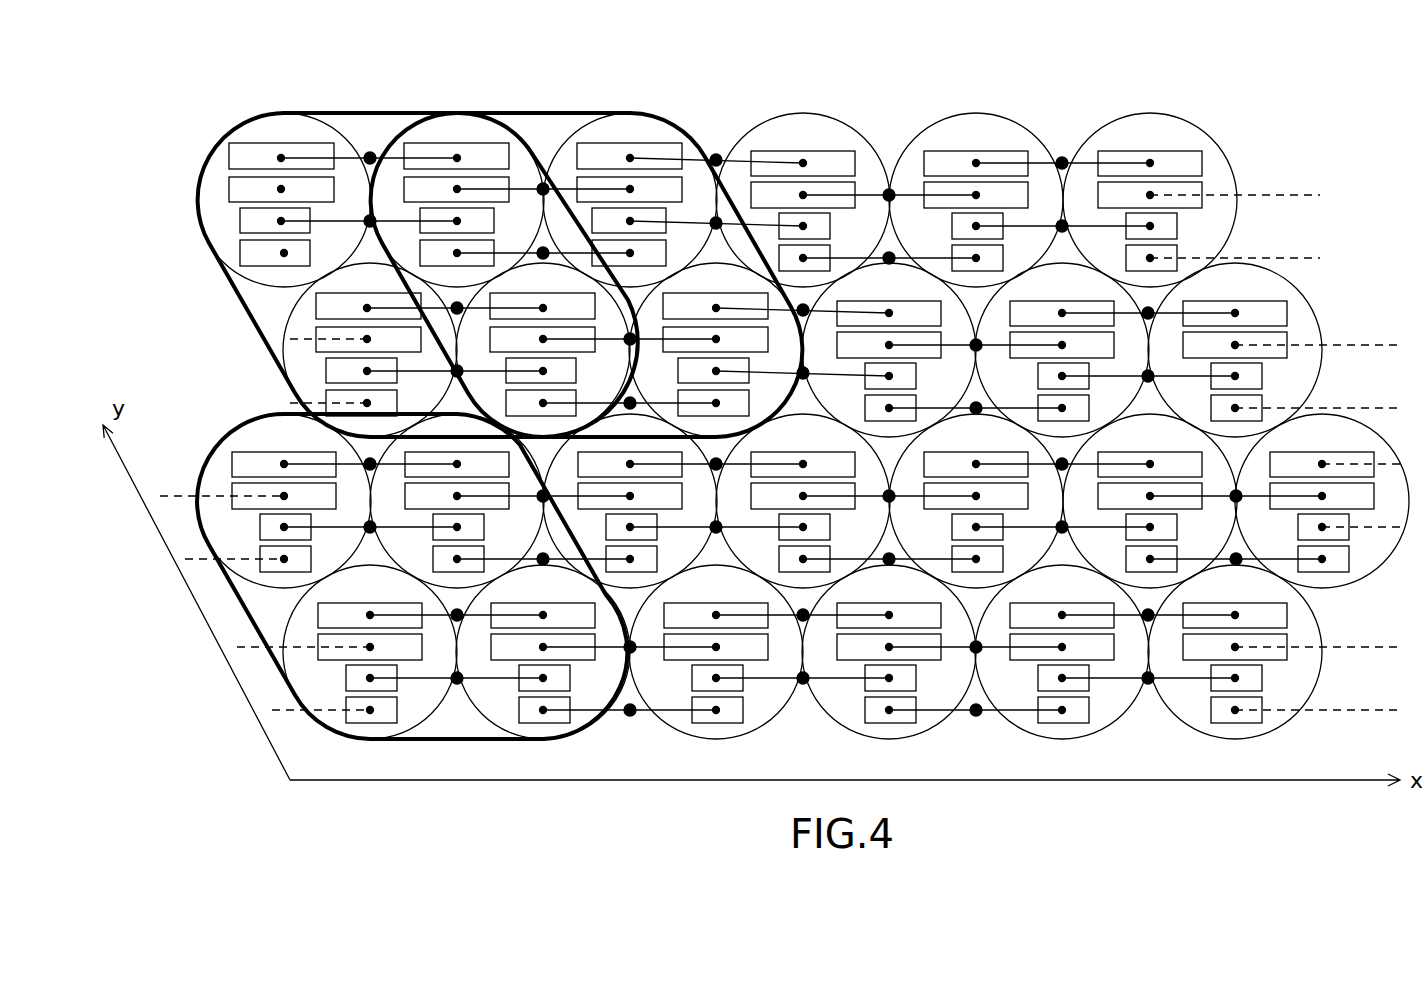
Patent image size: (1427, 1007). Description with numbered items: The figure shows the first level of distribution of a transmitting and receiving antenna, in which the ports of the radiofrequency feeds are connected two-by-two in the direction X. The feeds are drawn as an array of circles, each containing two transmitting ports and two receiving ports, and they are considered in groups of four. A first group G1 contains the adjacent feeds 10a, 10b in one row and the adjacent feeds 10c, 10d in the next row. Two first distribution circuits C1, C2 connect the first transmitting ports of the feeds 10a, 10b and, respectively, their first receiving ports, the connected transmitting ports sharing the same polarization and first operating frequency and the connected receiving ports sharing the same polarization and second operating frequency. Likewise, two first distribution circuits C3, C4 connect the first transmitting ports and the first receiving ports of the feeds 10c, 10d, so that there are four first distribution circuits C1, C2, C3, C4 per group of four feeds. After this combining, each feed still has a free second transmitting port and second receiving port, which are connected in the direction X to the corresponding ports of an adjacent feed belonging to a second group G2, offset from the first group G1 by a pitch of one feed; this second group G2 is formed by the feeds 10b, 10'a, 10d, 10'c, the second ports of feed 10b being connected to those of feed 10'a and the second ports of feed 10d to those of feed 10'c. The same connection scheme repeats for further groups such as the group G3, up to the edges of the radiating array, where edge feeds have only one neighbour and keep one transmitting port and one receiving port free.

The radiofrequency feed 10a is at (278, 133).
The radiofrequency feed 10b is at (460, 128).
The radiofrequency feed 10'a is at (630, 156).
The radiofrequency feed 10c is at (302, 322).
The radiofrequency feed 10d is at (495, 394).
The radiofrequency feed 10'c is at (716, 243).
The first group of four feeds G1 is at (373, 112).
The second group of four feeds G2 is at (550, 112).
The group of four feeds G3 is at (460, 741).
The first distribution circuit C1 is at (370, 152).
The first distribution circuit C2 is at (366, 225).
The first distribution circuit C3 is at (458, 315).
The first distribution circuit C4 is at (456, 377).